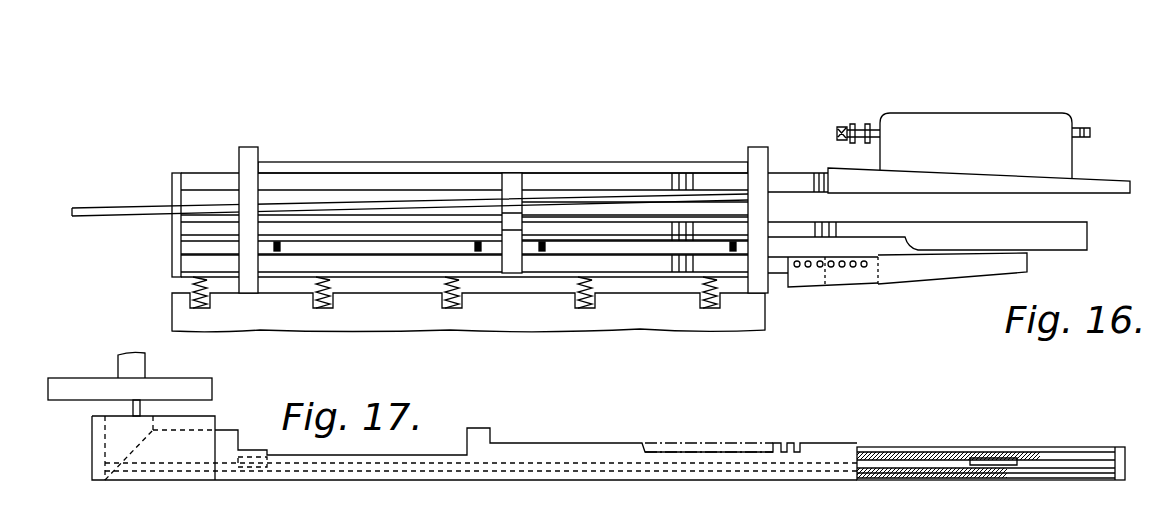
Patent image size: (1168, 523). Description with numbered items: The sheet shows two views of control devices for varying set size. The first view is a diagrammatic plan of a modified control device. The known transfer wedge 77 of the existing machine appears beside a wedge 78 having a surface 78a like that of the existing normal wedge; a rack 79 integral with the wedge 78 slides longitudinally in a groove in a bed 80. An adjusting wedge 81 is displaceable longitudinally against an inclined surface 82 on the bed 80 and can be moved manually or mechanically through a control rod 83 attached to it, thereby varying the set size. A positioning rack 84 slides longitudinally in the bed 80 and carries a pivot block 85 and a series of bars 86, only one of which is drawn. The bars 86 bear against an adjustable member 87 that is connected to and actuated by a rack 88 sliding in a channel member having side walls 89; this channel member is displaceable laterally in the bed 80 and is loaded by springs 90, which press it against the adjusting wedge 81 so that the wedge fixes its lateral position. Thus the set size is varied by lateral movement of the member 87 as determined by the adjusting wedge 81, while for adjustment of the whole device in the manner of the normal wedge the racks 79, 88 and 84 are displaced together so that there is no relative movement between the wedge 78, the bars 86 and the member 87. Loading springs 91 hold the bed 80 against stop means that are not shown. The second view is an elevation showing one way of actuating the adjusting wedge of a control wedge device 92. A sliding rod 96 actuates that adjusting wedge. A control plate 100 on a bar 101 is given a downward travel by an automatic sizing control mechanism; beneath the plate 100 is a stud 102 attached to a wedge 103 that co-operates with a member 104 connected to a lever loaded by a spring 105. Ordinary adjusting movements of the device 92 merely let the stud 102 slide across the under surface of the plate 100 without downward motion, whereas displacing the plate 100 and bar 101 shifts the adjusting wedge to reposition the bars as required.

In FIG. 16, the transfer wedge 77 is at (985, 135).
In FIG. 16, the wedge 78 is at (1120, 187).
In FIG. 16, the surface 78a is at (1090, 180).
In FIG. 16, the rack 79 is at (698, 180).
In FIG. 16, the bed 80 is at (246, 160).
In FIG. 16, the adjusting wedge 81 is at (638, 208).
In FIG. 16, the inclined surface 82 is at (358, 200).
In FIG. 16, the control rod 83 is at (119, 211).
In FIG. 16, the positioning rack 84 is at (640, 267).
In FIG. 16, the pivot block 85 is at (808, 279).
In FIG. 16, the bars 86 is at (963, 268).
In FIG. 16, the adjustable member 87 is at (1073, 238).
In FIG. 16, the rack 88 is at (547, 228).
In FIG. 16, the side walls 89 is at (593, 217).
In FIG. 16, the springs 90 is at (277, 252).
In FIG. 16, the loading springs 91 is at (449, 308).
In FIG. 17, the control wedge device 92 is at (917, 443).
In FIG. 17, the sliding rod 96 is at (620, 462).
In FIG. 17, the control plate 100 is at (212, 390).
In FIG. 17, the bar 101 is at (125, 367).
In FIG. 17, the stud 102 is at (131, 410).
In FIG. 17, the wedge 103 is at (107, 477).
In FIG. 17, the member 104 is at (205, 455).
In FIG. 17, the spring 105 is at (247, 513).